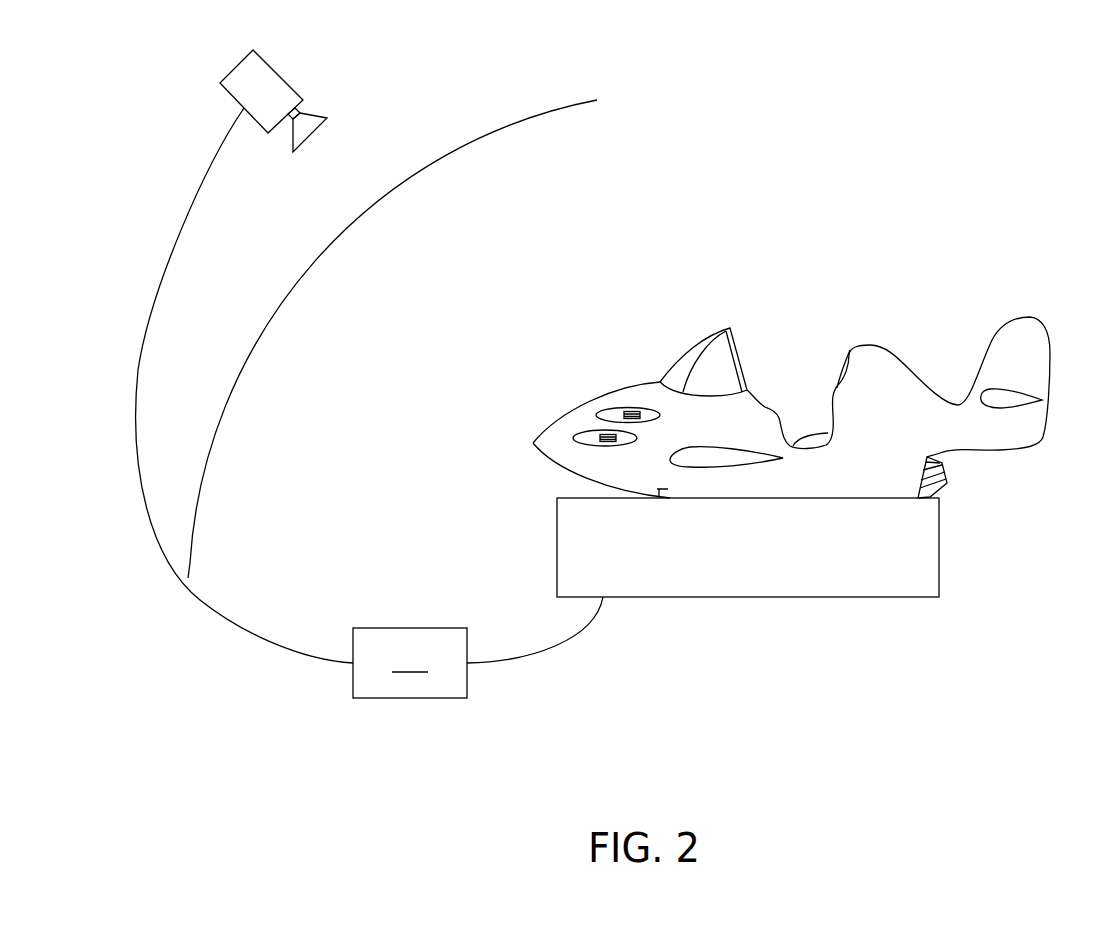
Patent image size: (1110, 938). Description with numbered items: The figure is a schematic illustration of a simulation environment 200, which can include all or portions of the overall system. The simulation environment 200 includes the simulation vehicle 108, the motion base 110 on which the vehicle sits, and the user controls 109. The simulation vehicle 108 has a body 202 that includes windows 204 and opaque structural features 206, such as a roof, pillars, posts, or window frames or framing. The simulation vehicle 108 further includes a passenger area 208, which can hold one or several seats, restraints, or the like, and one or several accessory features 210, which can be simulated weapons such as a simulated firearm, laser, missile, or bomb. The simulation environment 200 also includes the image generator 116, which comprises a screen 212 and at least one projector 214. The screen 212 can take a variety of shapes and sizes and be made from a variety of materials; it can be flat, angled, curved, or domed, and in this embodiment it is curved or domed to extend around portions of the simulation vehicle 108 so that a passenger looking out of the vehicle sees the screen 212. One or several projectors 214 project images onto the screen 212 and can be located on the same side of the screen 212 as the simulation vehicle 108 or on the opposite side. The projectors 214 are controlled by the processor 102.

The processor 102 is at (478, 647).
The simulation vehicle 108 is at (762, 358).
The user controls 109 is at (757, 397).
The motion base 110 is at (848, 597).
The image generator 116 is at (408, 77).
The simulation environment 200 is at (983, 130).
The body 202 is at (597, 397).
The windows 204 is at (692, 363).
The opaque structural features 206 is at (733, 327).
The passenger area 208 is at (801, 371).
The accessory features 210 is at (597, 458).
The screen 212 is at (505, 127).
The projector 214 is at (238, 65).